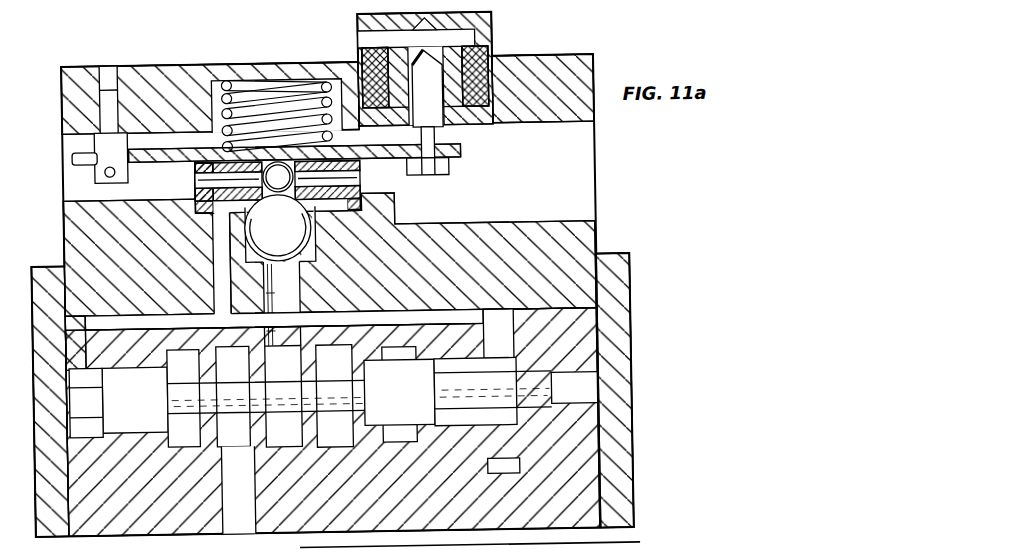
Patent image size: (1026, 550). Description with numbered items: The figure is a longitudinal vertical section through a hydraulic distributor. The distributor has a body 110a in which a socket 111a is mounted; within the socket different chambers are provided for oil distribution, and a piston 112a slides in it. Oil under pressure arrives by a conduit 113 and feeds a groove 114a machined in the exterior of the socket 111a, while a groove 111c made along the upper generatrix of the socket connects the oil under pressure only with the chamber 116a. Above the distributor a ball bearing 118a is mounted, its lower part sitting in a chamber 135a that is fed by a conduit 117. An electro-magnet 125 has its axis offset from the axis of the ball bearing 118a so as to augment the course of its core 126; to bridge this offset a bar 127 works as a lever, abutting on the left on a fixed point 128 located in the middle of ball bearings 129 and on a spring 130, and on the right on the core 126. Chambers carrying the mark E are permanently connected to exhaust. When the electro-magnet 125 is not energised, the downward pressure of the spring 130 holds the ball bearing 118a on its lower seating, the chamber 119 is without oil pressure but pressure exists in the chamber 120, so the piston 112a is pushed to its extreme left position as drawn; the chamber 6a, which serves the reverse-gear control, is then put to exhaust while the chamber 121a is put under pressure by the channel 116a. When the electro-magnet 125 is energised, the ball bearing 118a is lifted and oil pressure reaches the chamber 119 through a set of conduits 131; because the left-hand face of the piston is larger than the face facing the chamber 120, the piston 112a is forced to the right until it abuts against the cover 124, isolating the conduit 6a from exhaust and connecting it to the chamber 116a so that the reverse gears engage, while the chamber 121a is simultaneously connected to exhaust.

The chamber 6a is at (238, 490).
The body 110a is at (567, 508).
The socket 111a is at (566, 419).
The groove 111c is at (412, 316).
The piston 112a is at (399, 392).
The conduit 113 is at (470, 537).
The groove 114a is at (513, 341).
The chamber 116a is at (285, 396).
The conduit 117 is at (282, 303).
The ball bearing 118a is at (277, 227).
The chamber 119 is at (100, 419).
The chamber 120 is at (496, 365).
The chamber 121a is at (337, 396).
The cover 124 is at (43, 278).
The electro-magnet 125 is at (497, 51).
The core 126 is at (443, 128).
The bar 127 is at (409, 153).
The fixed point 128 is at (118, 181).
The ball bearing 129 is at (278, 186).
The spring 130 is at (347, 63).
The conduit 131 is at (218, 301).
The chamber 135a is at (307, 253).
The exhaust mark E is at (421, 344).